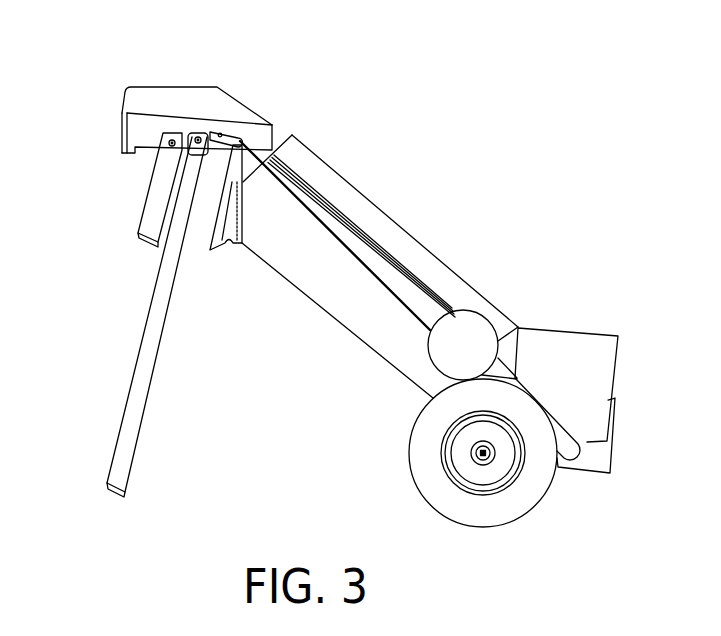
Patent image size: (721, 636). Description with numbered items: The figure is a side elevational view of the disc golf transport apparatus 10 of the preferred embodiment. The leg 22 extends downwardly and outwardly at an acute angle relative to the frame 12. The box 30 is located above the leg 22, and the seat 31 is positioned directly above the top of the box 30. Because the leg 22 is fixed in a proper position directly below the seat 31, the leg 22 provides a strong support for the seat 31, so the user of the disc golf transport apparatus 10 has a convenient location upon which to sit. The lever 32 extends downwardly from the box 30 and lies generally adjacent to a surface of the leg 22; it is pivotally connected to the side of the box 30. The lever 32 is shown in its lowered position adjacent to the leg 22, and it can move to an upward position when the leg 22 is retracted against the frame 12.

The disc golf transport apparatus 10 is at (403, 147).
The frame 12 is at (348, 313).
The leg 22 is at (143, 377).
The box 30 is at (138, 133).
The seat 31 is at (173, 95).
The lever 32 is at (152, 210).